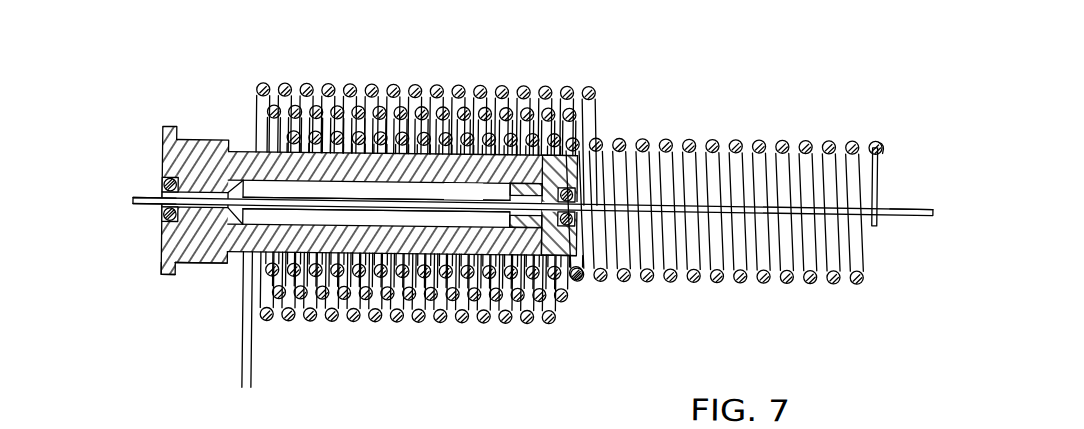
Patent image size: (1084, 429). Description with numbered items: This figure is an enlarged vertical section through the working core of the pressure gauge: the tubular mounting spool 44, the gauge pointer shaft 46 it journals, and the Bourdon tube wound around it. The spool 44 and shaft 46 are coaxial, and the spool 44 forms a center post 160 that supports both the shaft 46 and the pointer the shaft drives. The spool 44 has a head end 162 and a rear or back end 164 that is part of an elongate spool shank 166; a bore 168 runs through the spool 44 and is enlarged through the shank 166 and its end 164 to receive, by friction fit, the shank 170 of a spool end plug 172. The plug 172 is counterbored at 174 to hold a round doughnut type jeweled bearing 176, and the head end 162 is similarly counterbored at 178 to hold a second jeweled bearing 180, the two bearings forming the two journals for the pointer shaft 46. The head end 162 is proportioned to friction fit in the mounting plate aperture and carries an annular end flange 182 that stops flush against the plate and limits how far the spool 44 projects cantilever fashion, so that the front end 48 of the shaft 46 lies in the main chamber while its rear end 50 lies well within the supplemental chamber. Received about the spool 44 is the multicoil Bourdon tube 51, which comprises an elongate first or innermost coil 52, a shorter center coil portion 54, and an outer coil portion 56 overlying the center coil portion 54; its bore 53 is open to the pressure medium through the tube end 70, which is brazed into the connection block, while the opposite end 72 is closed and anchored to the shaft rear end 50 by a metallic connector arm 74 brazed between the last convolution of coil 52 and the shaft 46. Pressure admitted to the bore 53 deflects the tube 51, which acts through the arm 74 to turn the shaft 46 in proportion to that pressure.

The tubular mounting spool 44 is at (215, 149).
The gauge pointer shaft 46 is at (904, 199).
The front end 48 is at (152, 196).
The rear end 50 is at (931, 198).
The multicoil coil Bourdon tube 51 is at (821, 131).
The first or innermost coil 52 is at (747, 172).
The bore 53 is at (766, 182).
The center coil portion 54 is at (596, 103).
The outer coil portion 56 is at (590, 84).
The end of the Bourdon tube 70 is at (254, 372).
The end of the Bourdon tube 72 is at (863, 262).
The metallic connector arm 74 is at (880, 163).
The center post 160 is at (158, 196).
The head end 162 is at (203, 263).
The rear or back end 164 is at (534, 181).
The spool shank 166 is at (393, 157).
The bore 168 is at (270, 215).
The shank 170 is at (509, 183).
The spool end plug 172 is at (567, 167).
The counterbore 174 is at (580, 252).
The jeweled bearing 176 is at (580, 214).
The counterbore 178 is at (162, 258).
The jeweled bearing 180 is at (158, 214).
The annular end flange 182 is at (172, 125).